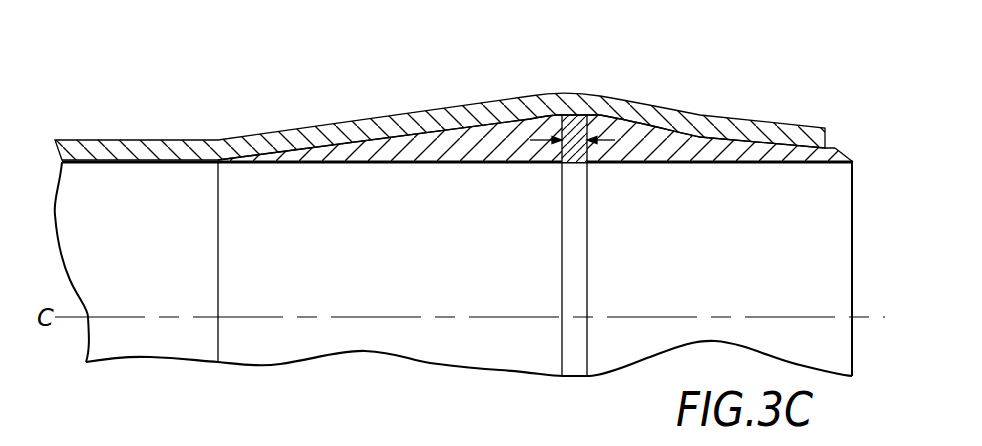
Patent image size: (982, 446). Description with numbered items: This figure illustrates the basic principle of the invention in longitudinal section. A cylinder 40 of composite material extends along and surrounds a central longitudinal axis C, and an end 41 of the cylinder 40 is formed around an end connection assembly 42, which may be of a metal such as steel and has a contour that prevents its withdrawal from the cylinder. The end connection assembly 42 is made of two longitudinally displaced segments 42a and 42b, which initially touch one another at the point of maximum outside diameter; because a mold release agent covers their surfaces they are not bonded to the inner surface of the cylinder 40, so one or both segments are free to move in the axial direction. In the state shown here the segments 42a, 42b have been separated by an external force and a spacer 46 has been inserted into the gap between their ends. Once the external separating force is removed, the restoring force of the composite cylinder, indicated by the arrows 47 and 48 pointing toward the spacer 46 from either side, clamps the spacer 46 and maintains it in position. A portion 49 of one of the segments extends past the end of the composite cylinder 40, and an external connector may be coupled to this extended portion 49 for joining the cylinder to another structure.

The cylinder 40 is at (128, 140).
The end of the cylinder 41 is at (637, 72).
The end connection assembly 42 is at (468, 136).
The segment 42a is at (424, 140).
The segment 42b is at (689, 138).
The spacer 46 is at (577, 116).
The arrow 47 is at (533, 142).
The arrow 48 is at (613, 142).
The extended portion 49 is at (836, 148).